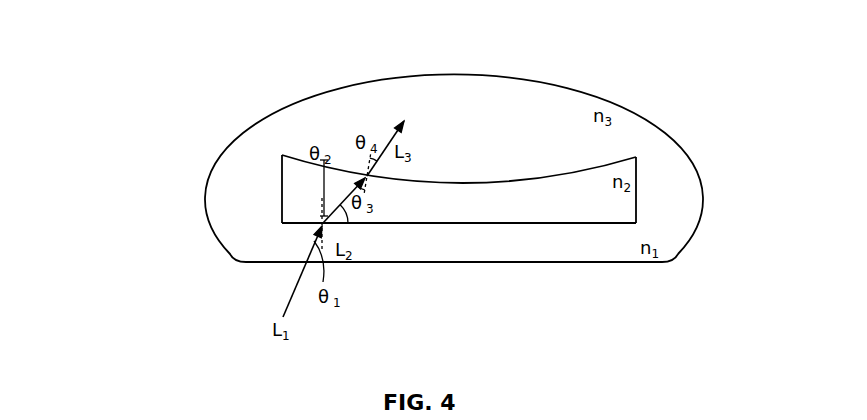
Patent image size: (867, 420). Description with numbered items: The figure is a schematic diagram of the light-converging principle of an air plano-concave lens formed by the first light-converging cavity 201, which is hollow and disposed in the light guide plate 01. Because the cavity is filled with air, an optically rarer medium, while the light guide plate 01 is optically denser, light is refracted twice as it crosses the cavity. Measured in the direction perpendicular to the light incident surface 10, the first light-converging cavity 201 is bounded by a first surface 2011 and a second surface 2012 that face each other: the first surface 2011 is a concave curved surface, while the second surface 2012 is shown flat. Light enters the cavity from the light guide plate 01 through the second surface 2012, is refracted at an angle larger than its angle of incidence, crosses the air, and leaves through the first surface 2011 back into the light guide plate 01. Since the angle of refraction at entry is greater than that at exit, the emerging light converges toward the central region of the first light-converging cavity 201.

The light guide plate 01 is at (308, 122).
The light incident surface 10 is at (277, 262).
The first light-converging cavity 201 is at (384, 183).
The first surface 2011 is at (562, 176).
The second surface 2012 is at (564, 223).